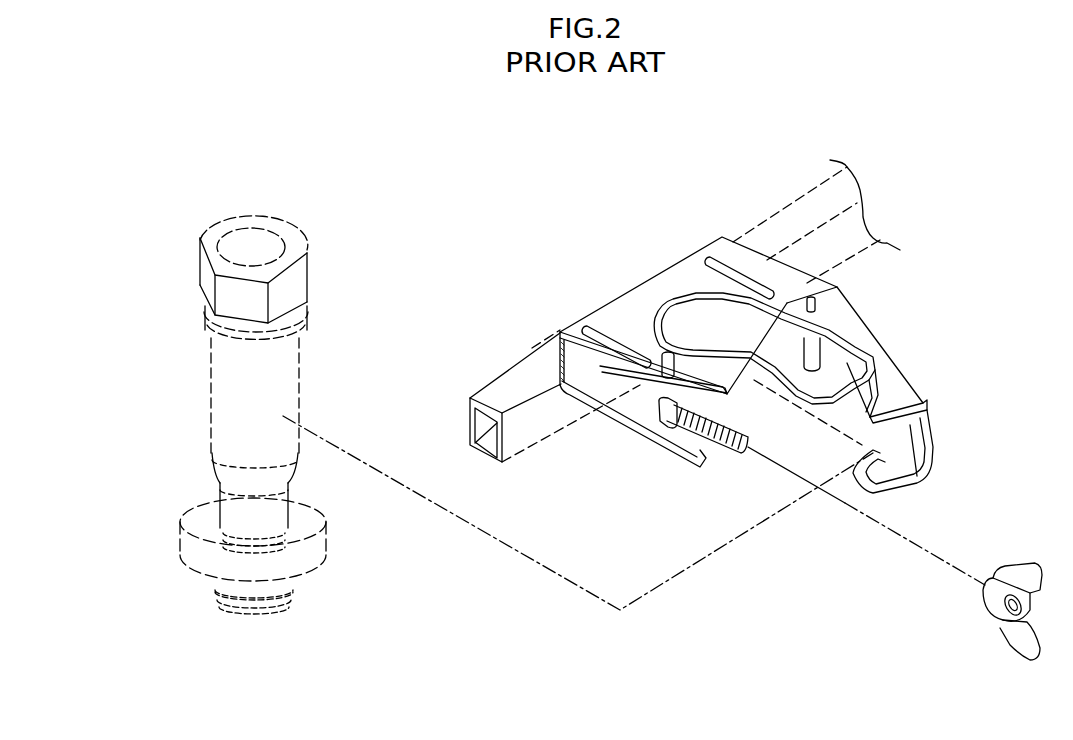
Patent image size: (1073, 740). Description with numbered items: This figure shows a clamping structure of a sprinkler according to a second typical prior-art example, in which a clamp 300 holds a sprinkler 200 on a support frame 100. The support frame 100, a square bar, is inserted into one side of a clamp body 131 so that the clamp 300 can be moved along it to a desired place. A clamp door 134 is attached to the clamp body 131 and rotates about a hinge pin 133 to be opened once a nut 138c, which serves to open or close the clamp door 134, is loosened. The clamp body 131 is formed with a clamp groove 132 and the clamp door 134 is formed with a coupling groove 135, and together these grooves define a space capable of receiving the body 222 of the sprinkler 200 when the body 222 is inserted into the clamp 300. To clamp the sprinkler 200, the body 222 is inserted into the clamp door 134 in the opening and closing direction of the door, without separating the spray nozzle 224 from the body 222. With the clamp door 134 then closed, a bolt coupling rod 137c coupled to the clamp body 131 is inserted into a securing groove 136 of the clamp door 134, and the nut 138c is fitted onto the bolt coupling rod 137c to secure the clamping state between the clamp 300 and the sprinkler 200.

The support frame 100 is at (532, 384).
The clamp body 131 is at (628, 307).
The clamp groove 132 is at (726, 302).
The hinge pin 133 is at (833, 307).
The clamp door 134 is at (893, 385).
The coupling groove 135 is at (867, 332).
The securing groove 136 is at (933, 437).
The bolt coupling rod 137c is at (700, 442).
The nut 138c is at (1013, 578).
The sprinkler 200 is at (178, 426).
The body 222 is at (215, 367).
The spray nozzle 224 is at (203, 572).
The clamp 300 is at (693, 238).